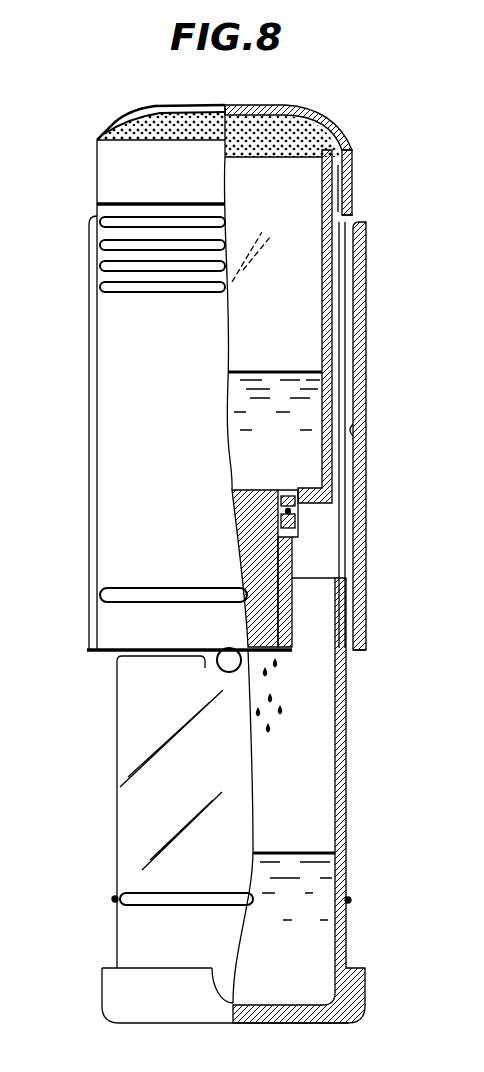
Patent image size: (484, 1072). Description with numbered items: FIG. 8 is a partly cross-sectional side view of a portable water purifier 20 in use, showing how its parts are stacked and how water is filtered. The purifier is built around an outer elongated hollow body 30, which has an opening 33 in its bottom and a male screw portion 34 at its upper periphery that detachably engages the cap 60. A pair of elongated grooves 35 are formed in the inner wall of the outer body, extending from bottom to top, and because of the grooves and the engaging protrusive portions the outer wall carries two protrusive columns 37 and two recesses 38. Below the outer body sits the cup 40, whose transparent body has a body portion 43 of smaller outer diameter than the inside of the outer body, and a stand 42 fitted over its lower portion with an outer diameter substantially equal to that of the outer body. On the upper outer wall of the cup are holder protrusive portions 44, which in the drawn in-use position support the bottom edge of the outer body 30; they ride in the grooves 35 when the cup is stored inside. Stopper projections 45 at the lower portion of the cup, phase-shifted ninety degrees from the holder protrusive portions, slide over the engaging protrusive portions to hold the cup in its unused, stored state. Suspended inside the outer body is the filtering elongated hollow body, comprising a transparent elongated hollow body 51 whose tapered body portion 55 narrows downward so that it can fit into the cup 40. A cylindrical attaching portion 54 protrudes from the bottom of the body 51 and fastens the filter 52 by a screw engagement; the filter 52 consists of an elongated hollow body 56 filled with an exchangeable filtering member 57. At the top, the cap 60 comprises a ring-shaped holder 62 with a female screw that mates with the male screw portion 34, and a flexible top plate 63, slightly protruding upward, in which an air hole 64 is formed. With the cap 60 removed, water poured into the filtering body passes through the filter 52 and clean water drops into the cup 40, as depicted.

The portable water purifier 20 is at (300, 87).
The outer elongated hollow body 30 is at (376, 292).
The opening 33 is at (355, 655).
The male screw portion 34 is at (356, 186).
The elongated grooves 35 is at (356, 436).
The protrusive columns 37 is at (362, 500).
The recesses 38 is at (133, 596).
The cup 40 is at (358, 829).
The stand 42 is at (143, 822).
The body portion 43 is at (341, 768).
The holder protrusive portions 44 is at (223, 650).
The stopper projections 45 is at (115, 900).
The transparent elongated hollow body 51 is at (328, 343).
The filter 52 is at (303, 590).
The cylindrical attaching portion 54 is at (298, 530).
The body portion 55 is at (332, 385).
The elongated hollow body 56 is at (295, 650).
The filtering member 57 is at (270, 606).
The cap 60 is at (98, 126).
The ring-shaped holder 62 is at (125, 170).
The top plate 63 is at (150, 105).
The air hole 64 is at (230, 106).